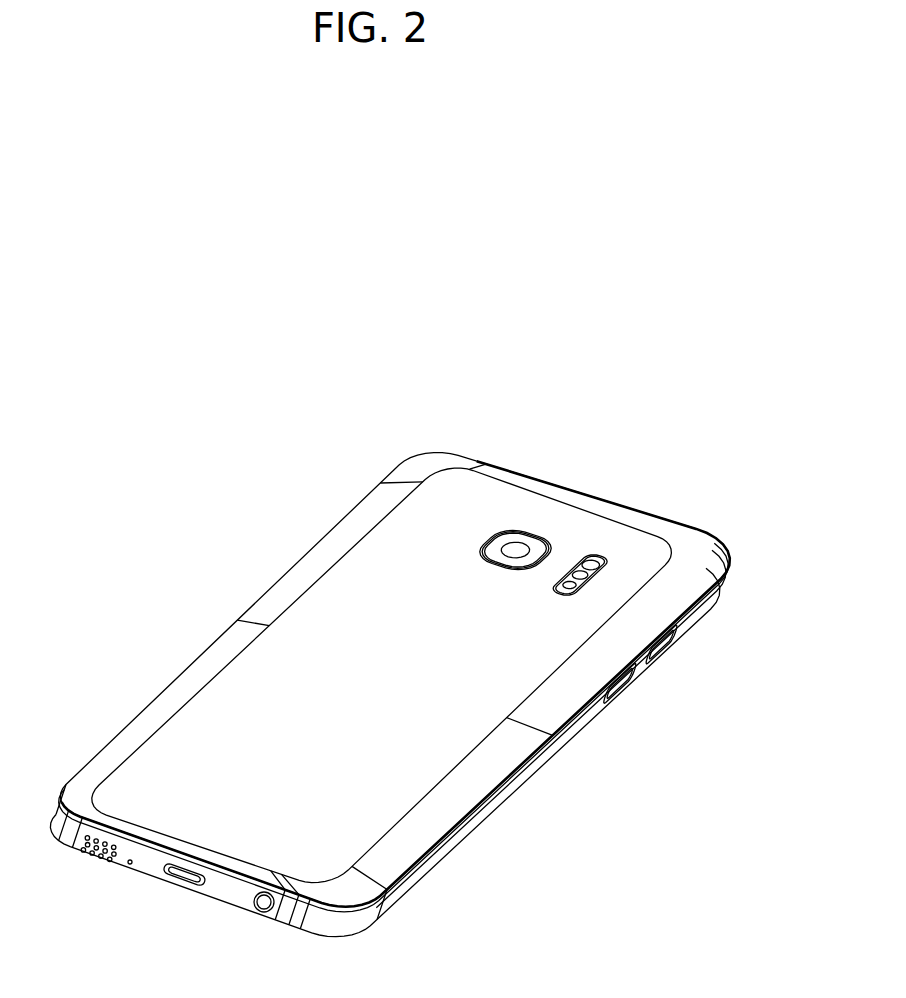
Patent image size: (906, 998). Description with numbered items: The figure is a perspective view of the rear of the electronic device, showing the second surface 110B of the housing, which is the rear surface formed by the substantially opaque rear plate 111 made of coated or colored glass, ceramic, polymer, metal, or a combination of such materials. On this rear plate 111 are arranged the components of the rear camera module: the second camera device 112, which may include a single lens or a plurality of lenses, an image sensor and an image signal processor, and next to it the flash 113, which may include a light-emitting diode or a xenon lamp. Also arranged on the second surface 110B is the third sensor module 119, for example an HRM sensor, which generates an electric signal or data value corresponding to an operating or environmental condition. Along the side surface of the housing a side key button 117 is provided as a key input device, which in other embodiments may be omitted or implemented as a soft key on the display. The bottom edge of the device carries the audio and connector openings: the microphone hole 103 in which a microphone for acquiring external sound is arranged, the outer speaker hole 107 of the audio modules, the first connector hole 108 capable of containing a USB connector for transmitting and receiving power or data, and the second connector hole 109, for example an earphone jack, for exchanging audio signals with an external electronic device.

The microphone hole 103 is at (130, 865).
The outer speaker hole 107 is at (87, 857).
The first connector hole 108 is at (183, 880).
The second connector hole 109 is at (260, 904).
The second surface 110B is at (378, 600).
The rear plate 111 is at (250, 713).
The second camera device 112 is at (520, 543).
The flash 113 is at (590, 562).
The side key button 117 is at (664, 646).
The third sensor module 119 is at (683, 625).